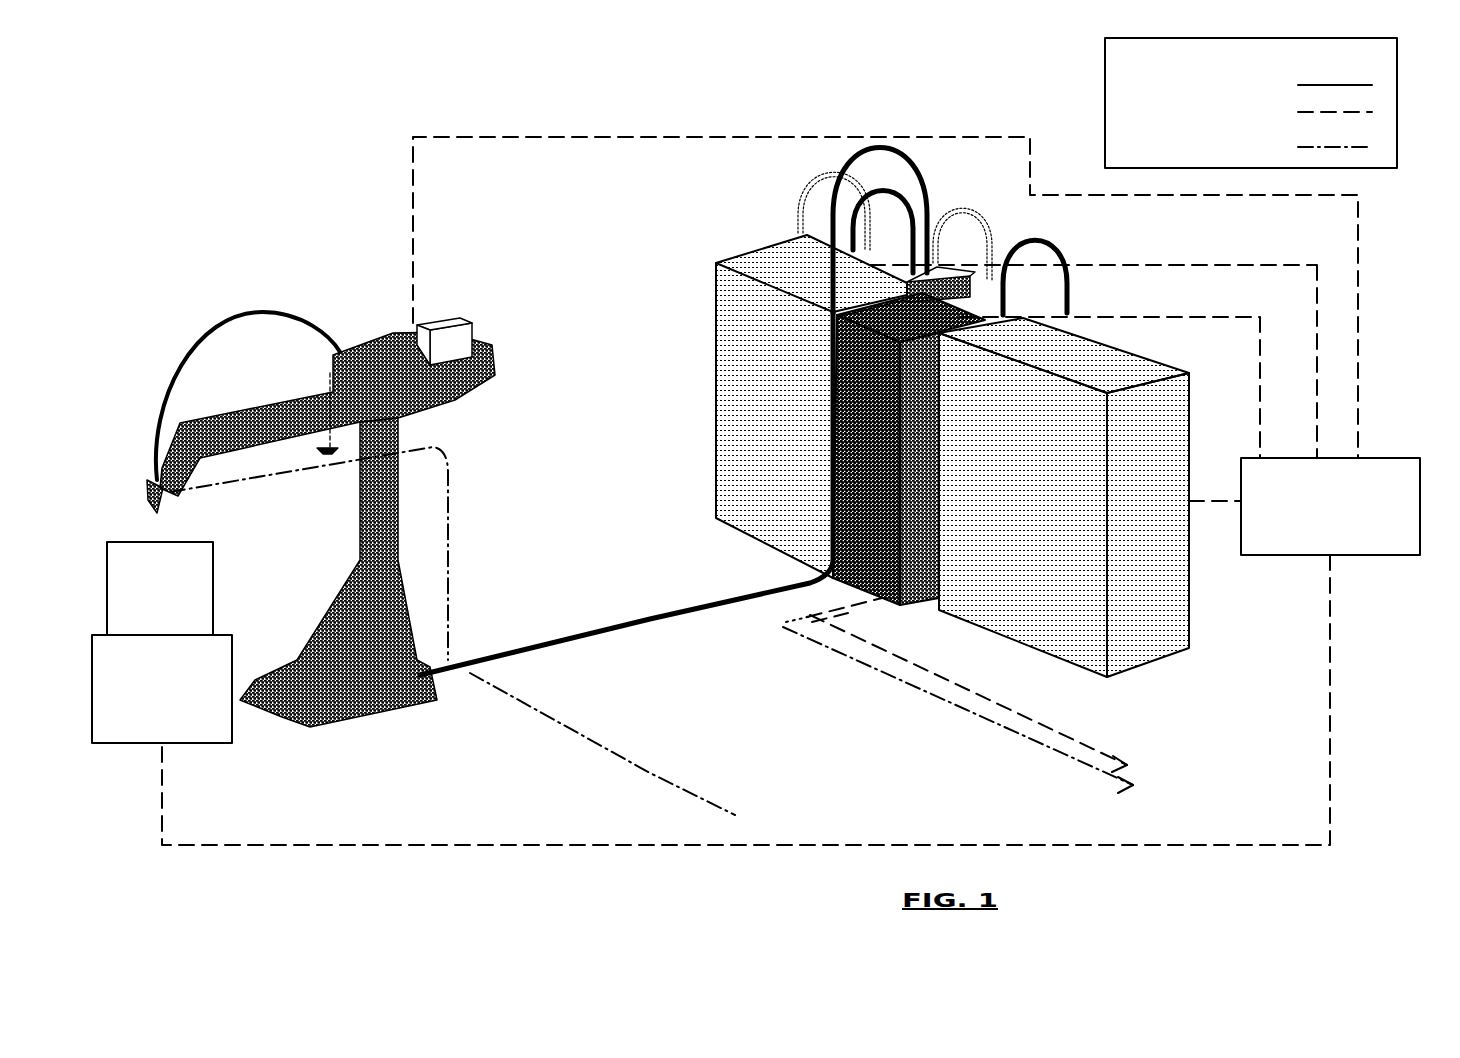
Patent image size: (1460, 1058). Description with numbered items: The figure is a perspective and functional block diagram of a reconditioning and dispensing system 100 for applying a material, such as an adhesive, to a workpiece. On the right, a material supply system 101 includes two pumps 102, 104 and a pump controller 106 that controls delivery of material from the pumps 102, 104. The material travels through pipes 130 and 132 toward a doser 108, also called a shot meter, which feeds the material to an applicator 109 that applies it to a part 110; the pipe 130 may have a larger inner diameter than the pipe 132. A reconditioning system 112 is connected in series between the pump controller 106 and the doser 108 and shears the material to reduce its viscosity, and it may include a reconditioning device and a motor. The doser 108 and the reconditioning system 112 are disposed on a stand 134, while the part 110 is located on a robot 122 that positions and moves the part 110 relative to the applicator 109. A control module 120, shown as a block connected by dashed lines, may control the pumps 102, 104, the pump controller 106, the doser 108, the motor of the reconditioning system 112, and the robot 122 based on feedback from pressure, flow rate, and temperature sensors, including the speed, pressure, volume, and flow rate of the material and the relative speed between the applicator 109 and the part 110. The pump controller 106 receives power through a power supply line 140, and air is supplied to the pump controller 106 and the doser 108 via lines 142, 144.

The reconditioning and dispensing system 100 is at (298, 140).
The material supply system 101 is at (769, 188).
The pump 102 is at (740, 255).
The pump 104 is at (1133, 358).
The pump controller 106 is at (907, 593).
The doser 108 is at (360, 355).
The applicator 109 is at (157, 515).
The part 110 is at (213, 548).
The reconditioning system 112 is at (452, 325).
The control module 120 is at (1390, 458).
The robot 122 is at (193, 745).
The pipe 130 is at (625, 628).
The pipe 132 is at (208, 328).
The stand 134 is at (350, 570).
The power supply line 140 is at (1020, 722).
The line 142 is at (890, 677).
The line 144 is at (452, 470).